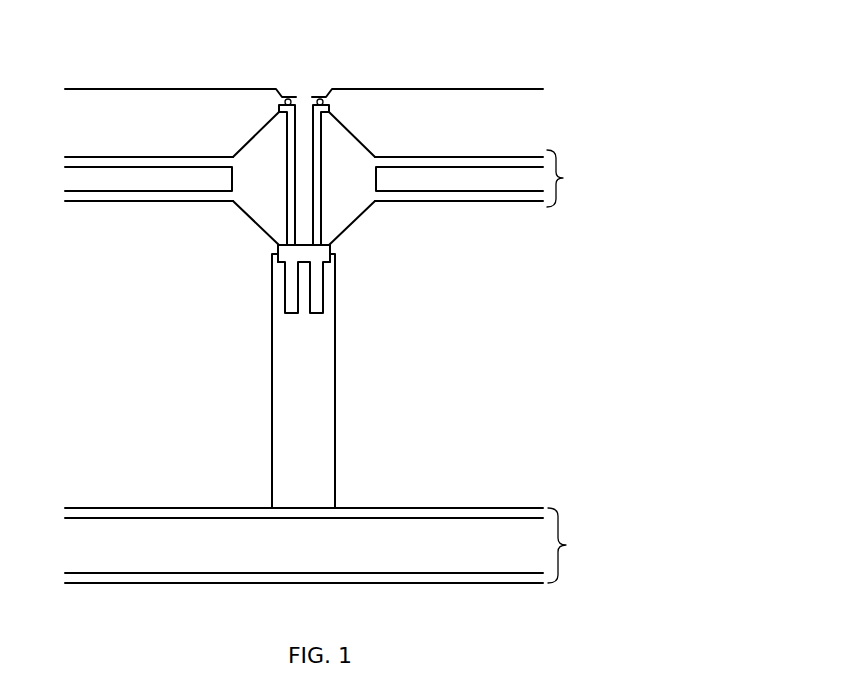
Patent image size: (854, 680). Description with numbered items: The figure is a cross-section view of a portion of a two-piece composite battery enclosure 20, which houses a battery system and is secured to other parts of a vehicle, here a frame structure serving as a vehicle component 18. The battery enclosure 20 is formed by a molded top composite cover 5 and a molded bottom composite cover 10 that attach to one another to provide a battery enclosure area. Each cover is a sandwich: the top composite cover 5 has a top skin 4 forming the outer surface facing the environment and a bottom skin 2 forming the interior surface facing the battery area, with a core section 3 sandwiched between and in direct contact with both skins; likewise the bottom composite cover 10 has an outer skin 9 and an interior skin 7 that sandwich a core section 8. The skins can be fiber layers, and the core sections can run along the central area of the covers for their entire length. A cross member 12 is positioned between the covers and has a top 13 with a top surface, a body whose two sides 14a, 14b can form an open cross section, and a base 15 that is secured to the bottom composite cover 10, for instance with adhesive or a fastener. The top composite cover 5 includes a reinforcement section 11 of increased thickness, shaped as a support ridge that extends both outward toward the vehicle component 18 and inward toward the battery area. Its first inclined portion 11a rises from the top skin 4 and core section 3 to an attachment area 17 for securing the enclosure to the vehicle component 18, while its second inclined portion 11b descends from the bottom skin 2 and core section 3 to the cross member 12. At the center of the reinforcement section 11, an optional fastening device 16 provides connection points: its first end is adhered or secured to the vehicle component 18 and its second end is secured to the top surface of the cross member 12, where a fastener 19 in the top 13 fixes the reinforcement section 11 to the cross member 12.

The bottom skin of top composite cover 2 is at (490, 201).
The core section 3 is at (470, 182).
The top skin of top composite cover 4 is at (490, 157).
The top composite cover 5 is at (563, 178).
The bottom skin of bottom composite cover 7 is at (417, 513).
The core section 8 is at (475, 523).
The top skin of bottom composite cover 9 is at (498, 577).
The bottom composite cover 10 is at (566, 545).
The reinforcement section 11 is at (251, 150).
The first inclined portion 11a is at (375, 155).
The second inclined portion 11b is at (243, 206).
The cross member 12 is at (302, 374).
The top of cross member 13 is at (334, 245).
The first side of body 14a is at (272, 393).
The second side of body 14b is at (337, 393).
The base of cross member 15 is at (270, 507).
The fastening device 16 is at (299, 108).
The attachment area 17 is at (325, 102).
The vehicle component 18 is at (470, 89).
The fastener 19 is at (318, 298).
The battery enclosure 20 is at (650, 77).